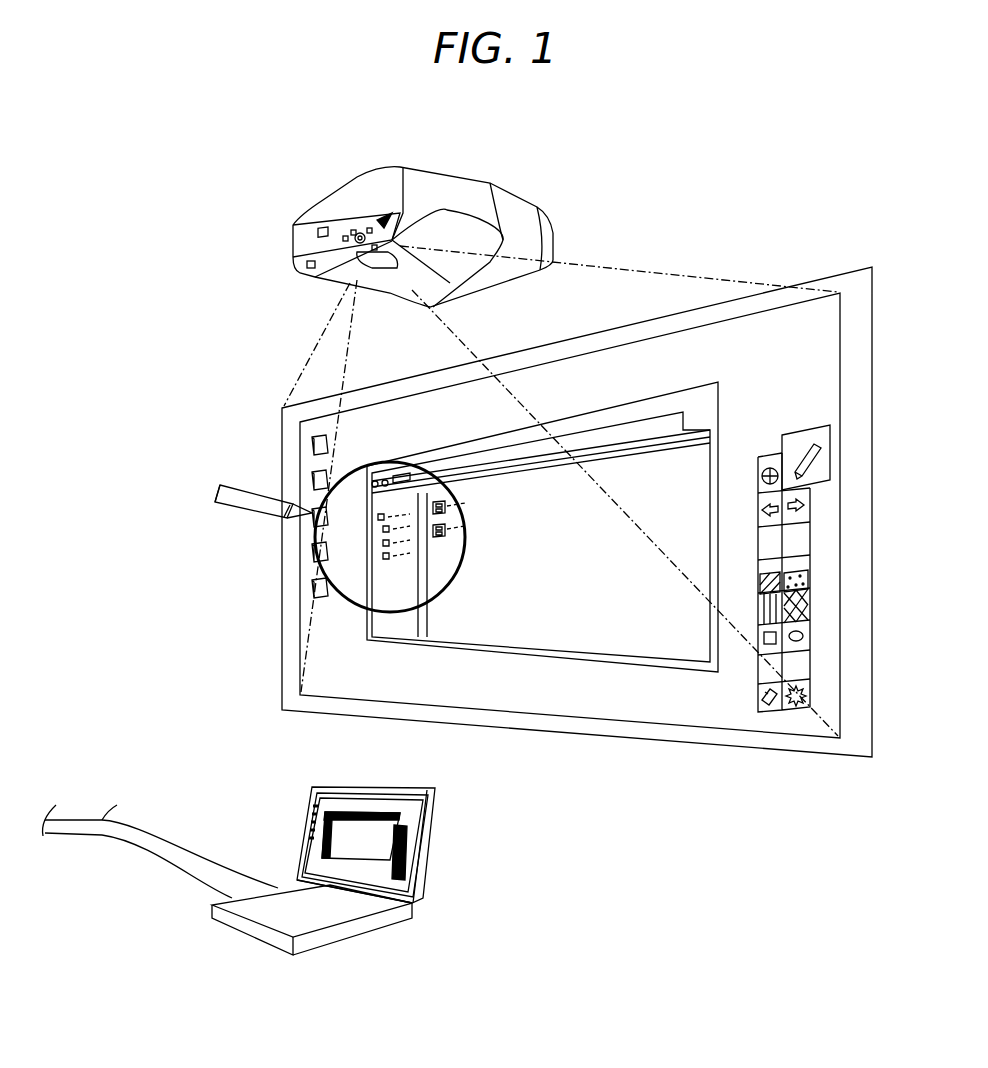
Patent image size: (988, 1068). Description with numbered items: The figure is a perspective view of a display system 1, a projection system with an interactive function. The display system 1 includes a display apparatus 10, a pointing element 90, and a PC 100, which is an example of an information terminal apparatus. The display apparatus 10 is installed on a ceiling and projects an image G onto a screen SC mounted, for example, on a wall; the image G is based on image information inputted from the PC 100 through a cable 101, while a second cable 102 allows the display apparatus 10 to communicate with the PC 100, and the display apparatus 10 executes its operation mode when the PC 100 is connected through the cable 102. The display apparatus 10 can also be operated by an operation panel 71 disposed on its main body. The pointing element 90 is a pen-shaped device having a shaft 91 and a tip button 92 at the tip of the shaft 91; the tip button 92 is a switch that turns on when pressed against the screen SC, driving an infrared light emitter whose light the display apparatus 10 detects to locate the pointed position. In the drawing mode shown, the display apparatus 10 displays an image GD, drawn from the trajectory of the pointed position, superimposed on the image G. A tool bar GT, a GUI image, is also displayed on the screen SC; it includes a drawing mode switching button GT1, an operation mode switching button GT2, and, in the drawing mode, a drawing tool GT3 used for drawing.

The display system 1 is at (118, 176).
The display apparatus 10 is at (465, 180).
The operation panel 71 is at (385, 217).
The screen SC is at (282, 406).
The pointing element 90 is at (262, 492).
The shaft 91 is at (225, 503).
The tip button 92 is at (312, 516).
The image G is at (572, 718).
The image GD is at (396, 613).
The tool bar GT is at (832, 529).
The drawing mode switching button GT1 is at (822, 458).
The operation mode switching button GT2 is at (759, 456).
The drawing tool GT3 is at (815, 582).
The PC 100 is at (360, 930).
The cable 101 is at (177, 838).
The cable 102 is at (130, 861).